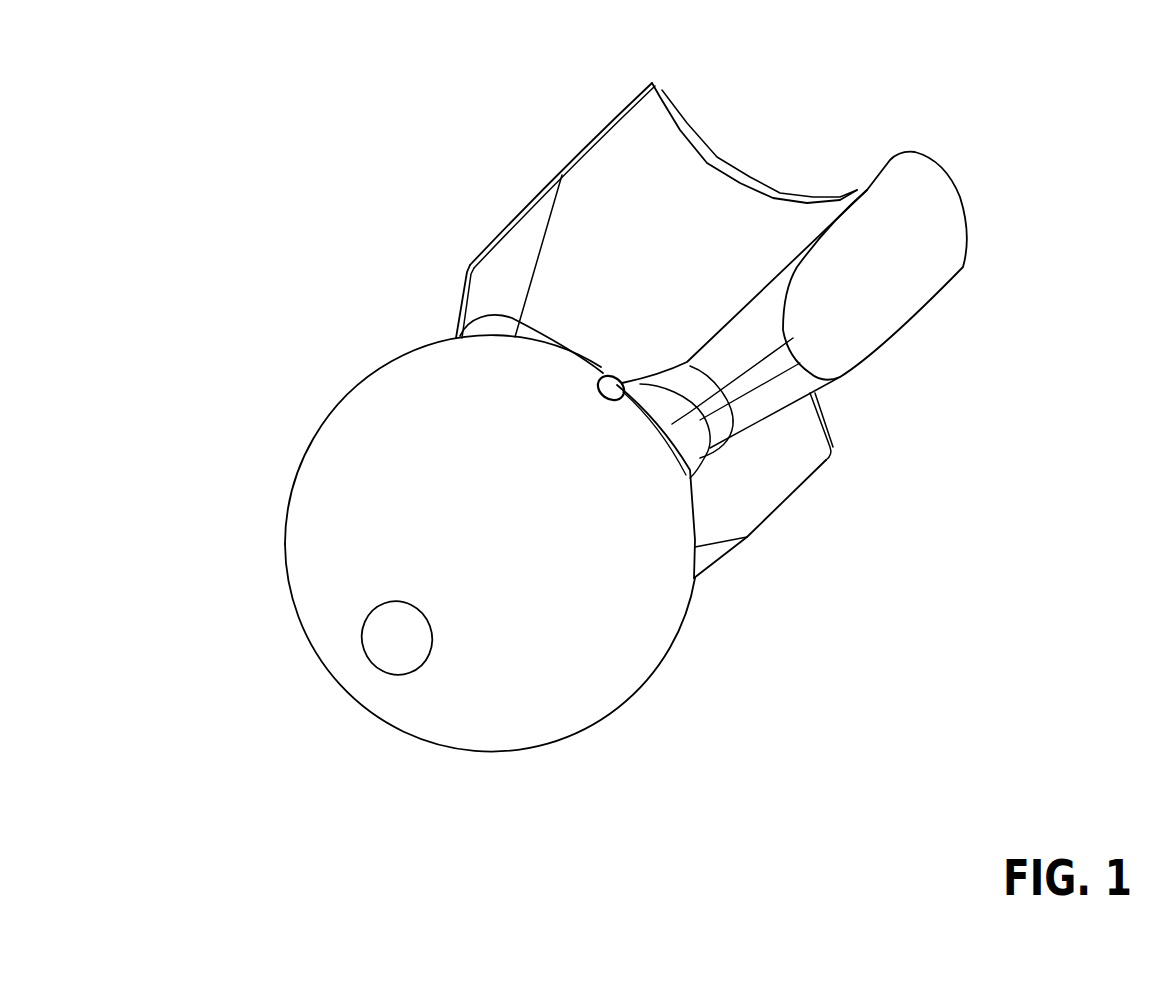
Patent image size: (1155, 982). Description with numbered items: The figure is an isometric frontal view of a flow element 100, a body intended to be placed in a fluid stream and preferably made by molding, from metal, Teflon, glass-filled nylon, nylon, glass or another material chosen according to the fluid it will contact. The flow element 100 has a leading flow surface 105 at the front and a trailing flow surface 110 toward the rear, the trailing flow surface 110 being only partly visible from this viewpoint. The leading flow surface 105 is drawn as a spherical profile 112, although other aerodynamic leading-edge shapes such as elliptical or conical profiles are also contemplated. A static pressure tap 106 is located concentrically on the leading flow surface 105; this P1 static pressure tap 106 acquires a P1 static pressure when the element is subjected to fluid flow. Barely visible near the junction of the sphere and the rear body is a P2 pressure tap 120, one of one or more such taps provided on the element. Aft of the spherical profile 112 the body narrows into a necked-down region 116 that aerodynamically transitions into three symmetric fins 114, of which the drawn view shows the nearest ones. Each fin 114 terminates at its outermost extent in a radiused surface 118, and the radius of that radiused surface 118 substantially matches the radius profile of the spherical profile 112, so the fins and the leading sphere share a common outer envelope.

The flow element 100 is at (867, 593).
The leading flow surface 105 is at (340, 657).
The static pressure tap 106 is at (408, 648).
The trailing flow surface 110 is at (777, 165).
The spherical profile 112 is at (343, 445).
The symmetric fins 114 is at (767, 473).
The necked-down region 116 is at (493, 302).
The radiused surface 118 is at (903, 262).
The P2 pressure tap 120 is at (612, 383).